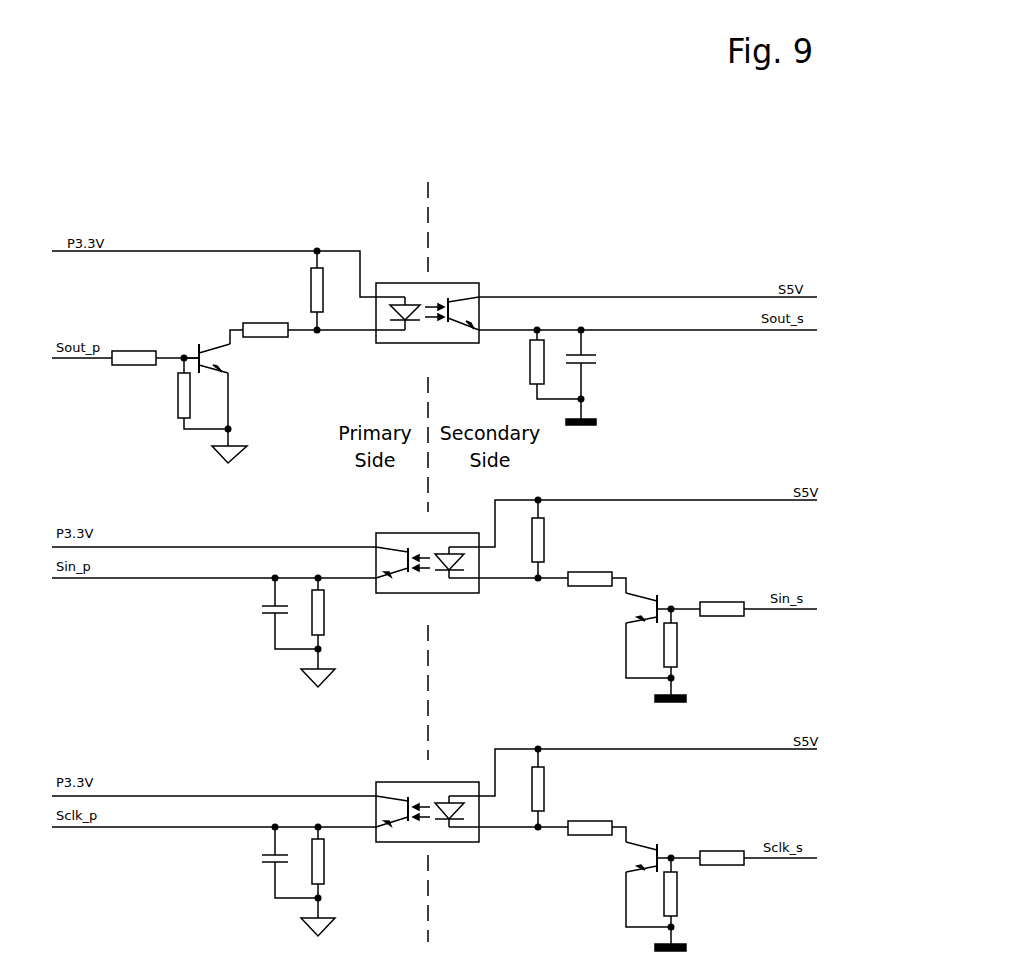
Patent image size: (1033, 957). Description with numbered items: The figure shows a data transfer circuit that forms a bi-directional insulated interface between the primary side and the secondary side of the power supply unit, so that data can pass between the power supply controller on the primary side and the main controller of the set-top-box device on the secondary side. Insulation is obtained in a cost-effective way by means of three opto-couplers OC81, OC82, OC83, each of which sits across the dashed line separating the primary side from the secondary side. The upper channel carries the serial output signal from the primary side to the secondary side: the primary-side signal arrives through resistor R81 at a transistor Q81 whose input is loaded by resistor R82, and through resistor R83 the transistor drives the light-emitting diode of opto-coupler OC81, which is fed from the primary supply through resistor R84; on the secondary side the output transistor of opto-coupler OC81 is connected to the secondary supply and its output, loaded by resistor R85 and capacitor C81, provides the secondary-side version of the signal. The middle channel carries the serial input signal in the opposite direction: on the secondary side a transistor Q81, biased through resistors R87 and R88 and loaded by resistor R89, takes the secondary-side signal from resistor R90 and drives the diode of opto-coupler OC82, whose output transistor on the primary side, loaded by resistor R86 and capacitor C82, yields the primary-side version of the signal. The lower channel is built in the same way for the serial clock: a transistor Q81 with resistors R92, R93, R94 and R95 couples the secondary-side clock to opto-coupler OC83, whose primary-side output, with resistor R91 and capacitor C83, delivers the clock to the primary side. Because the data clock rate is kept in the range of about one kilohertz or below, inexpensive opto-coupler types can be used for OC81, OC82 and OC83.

The resistor R81 is at (134, 351).
The resistor R82 is at (187, 393).
The resistor R83 is at (259, 326).
The resistor R84 is at (300, 290).
The resistor R85 is at (540, 364).
The resistor R86 is at (333, 613).
The resistor R87 is at (554, 539).
The resistor R88 is at (597, 574).
The resistor R89 is at (686, 643).
The resistor R90 is at (744, 600).
The resistor R91 is at (333, 862).
The resistor R92 is at (554, 788).
The resistor R93 is at (597, 823).
The resistor R94 is at (686, 892).
The resistor R95 is at (744, 849).
The capacitor C81 is at (595, 375).
The capacitor C82 is at (275, 613).
The capacitor C83 is at (275, 862).
The opto-coupler OC81 is at (427, 302).
The opto-coupler OC82 is at (427, 552).
The opto-coupler OC83 is at (427, 801).
The transistor Q81 is at (427, 635).